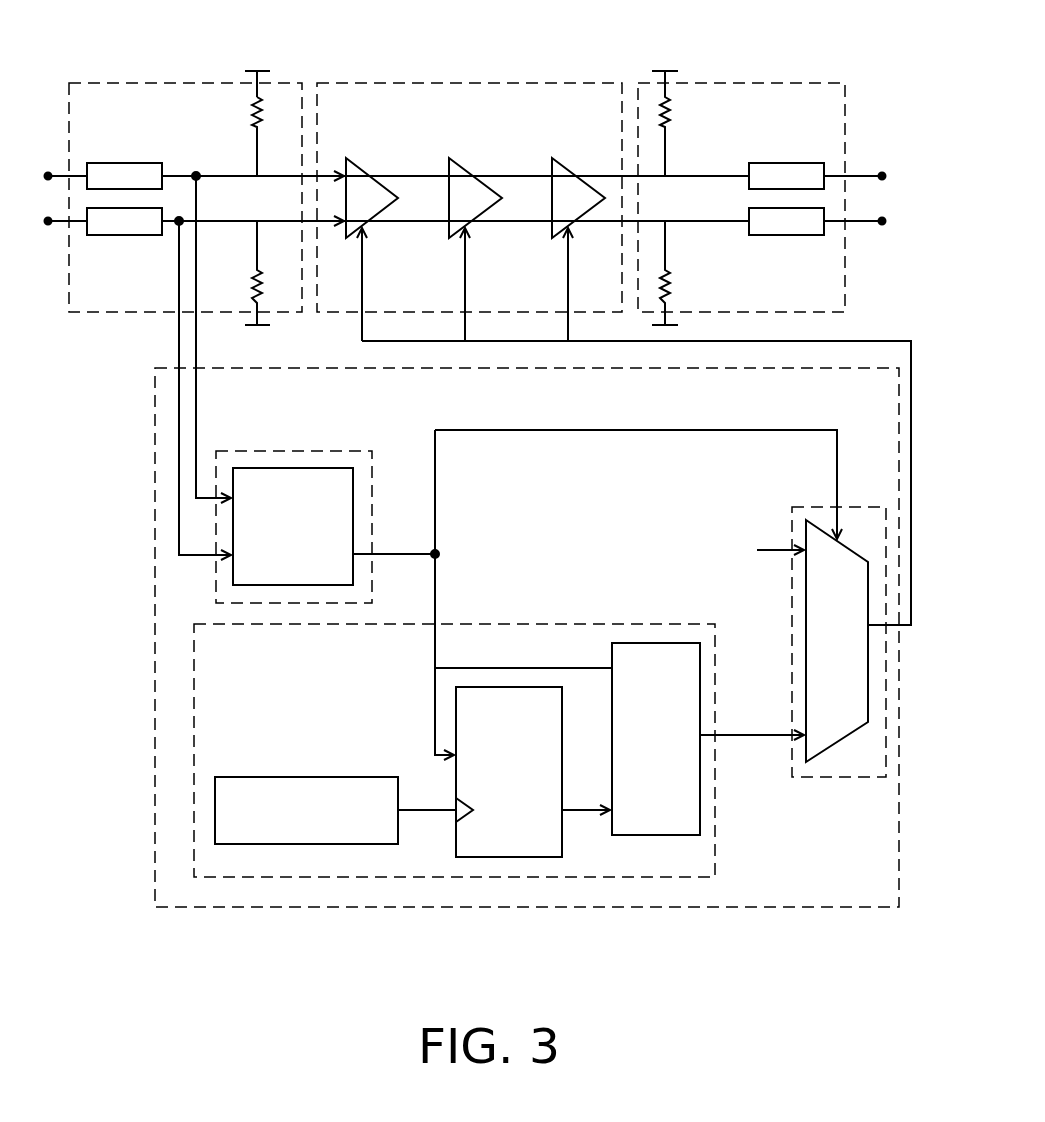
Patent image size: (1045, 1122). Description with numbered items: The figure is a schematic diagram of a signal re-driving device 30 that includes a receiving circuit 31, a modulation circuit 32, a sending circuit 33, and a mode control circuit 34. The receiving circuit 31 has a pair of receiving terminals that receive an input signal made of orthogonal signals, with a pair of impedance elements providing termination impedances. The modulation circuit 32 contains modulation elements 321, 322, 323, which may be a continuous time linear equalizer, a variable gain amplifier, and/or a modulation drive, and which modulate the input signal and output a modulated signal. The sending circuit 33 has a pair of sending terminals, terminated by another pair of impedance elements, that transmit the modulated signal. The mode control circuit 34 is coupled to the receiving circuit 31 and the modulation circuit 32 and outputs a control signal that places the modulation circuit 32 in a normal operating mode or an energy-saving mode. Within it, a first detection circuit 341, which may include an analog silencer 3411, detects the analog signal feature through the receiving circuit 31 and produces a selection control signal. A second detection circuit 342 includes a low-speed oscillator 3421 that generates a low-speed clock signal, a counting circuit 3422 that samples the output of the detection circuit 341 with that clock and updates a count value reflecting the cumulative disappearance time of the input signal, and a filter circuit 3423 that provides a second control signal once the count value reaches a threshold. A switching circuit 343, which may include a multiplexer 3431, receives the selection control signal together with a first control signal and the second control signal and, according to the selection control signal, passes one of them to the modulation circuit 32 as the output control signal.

The signal re-driving device 30 is at (900, 968).
The receiving circuit 31 is at (163, 83).
The modulation circuit 32 is at (469, 157).
The modulation element 321 is at (362, 163).
The modulation element 322 is at (465, 163).
The modulation element 323 is at (568, 163).
The sending circuit 33 is at (753, 83).
The mode control circuit 34 is at (506, 673).
The detection circuit 341 is at (294, 542).
The analog silencer 3411 is at (292, 585).
The detection circuit 342 is at (454, 801).
The low-speed oscillator 3421 is at (307, 777).
The counting circuit 3422 is at (507, 857).
The filter circuit 3423 is at (657, 835).
The switching circuit 343 is at (866, 683).
The multiplexer 3431 is at (828, 762).